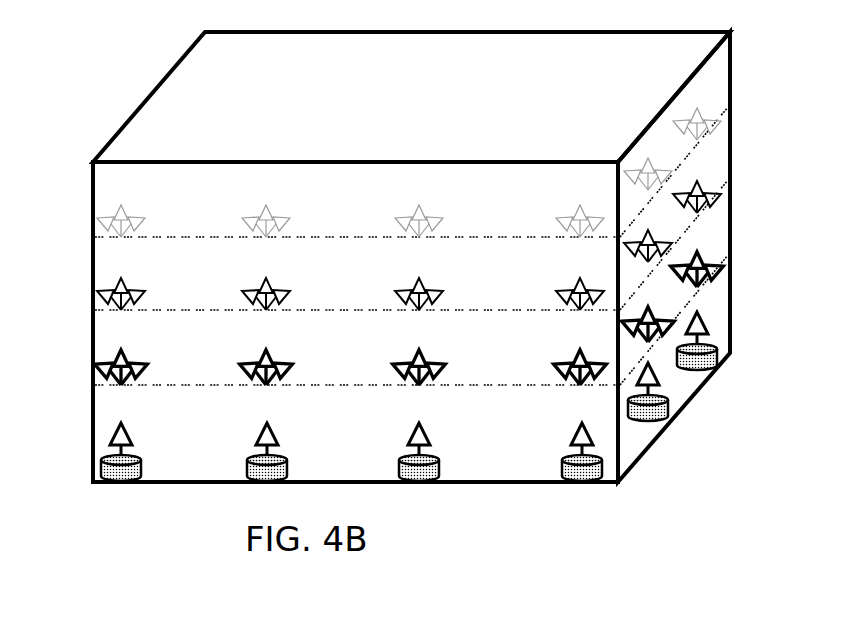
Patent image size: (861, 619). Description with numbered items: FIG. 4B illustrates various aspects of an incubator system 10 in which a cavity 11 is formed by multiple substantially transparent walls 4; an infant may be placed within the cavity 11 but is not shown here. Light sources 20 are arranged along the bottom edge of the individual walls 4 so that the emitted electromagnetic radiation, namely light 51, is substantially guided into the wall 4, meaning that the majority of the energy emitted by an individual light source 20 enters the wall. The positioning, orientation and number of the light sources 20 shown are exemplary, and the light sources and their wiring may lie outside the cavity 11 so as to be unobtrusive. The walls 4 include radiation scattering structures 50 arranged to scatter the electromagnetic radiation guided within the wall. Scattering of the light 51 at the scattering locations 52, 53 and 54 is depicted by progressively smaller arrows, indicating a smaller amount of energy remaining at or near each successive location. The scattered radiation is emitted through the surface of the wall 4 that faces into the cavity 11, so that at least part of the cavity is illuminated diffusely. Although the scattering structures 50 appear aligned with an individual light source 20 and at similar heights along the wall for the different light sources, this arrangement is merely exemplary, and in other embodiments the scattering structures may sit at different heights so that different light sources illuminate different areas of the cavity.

The walls 4 is at (610, 452).
The incubator system 10 is at (157, 497).
The cavity 11 is at (181, 133).
The light sources 20 is at (409, 442).
The radiation scattering structures 50 is at (93, 240).
The light 51 is at (702, 376).
The scattering location 52 is at (409, 318).
The scattering location 53 is at (409, 245).
The scattering location 54 is at (409, 172).